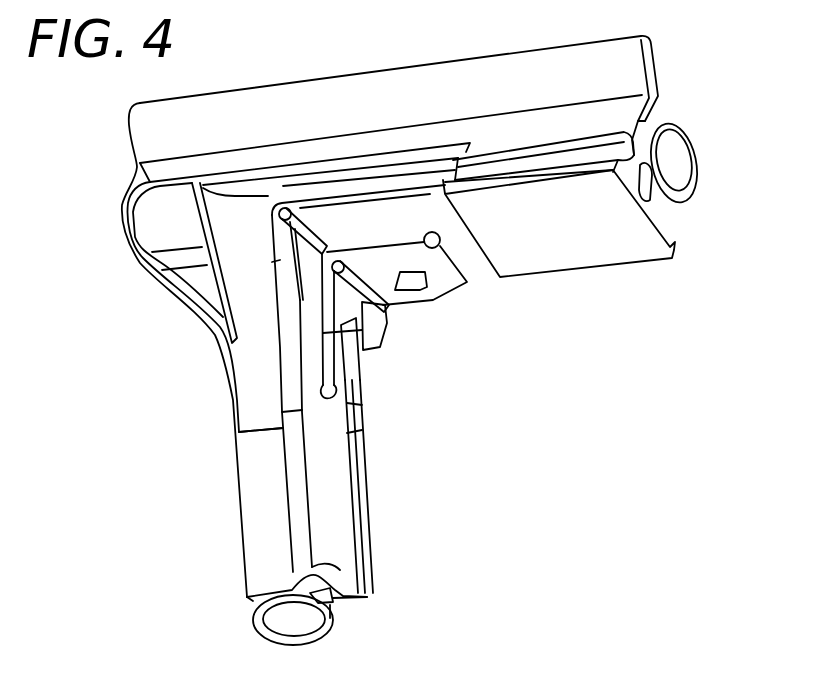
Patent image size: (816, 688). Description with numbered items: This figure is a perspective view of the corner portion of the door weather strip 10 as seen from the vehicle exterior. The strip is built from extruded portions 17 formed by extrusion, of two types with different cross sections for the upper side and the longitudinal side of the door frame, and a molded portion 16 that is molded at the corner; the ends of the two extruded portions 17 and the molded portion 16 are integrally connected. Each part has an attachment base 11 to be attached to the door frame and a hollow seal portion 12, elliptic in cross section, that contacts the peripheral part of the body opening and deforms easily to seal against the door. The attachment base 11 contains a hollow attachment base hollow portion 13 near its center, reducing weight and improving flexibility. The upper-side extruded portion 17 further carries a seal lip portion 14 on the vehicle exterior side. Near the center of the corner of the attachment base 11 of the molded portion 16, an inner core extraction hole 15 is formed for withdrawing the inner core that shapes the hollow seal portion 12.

The door weather strip 10 is at (213, 362).
The attachment base 11 is at (645, 208).
The hollow seal portion 12 is at (698, 165).
The attachment base hollow portion 13 is at (647, 183).
The seal lip portion 14 is at (612, 52).
The inner core extraction hole 15 is at (438, 246).
The molded portion 16 is at (255, 398).
The extruded portion 17 is at (567, 68).